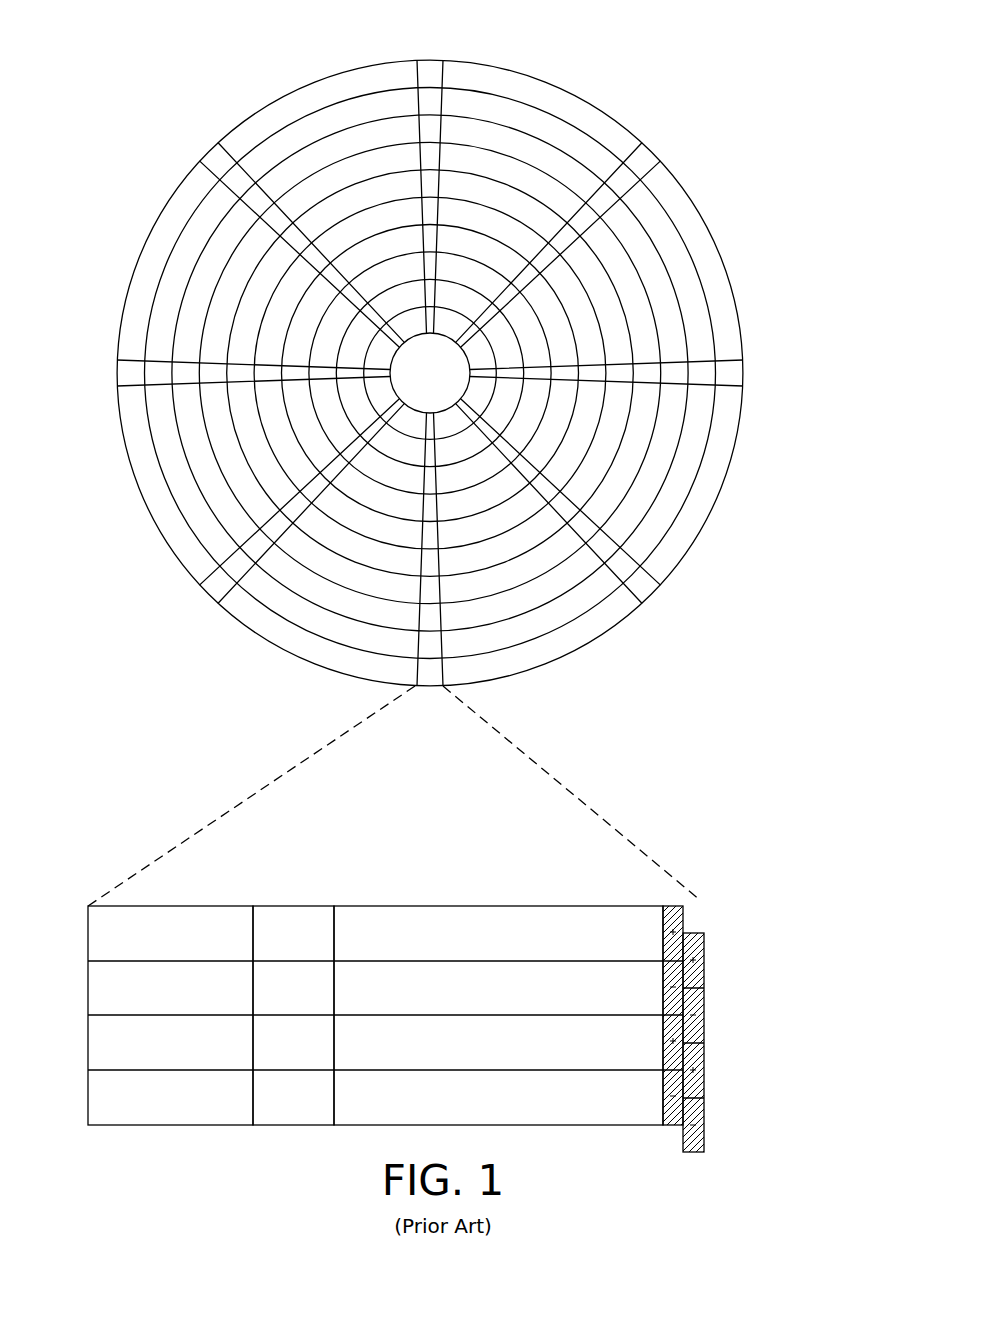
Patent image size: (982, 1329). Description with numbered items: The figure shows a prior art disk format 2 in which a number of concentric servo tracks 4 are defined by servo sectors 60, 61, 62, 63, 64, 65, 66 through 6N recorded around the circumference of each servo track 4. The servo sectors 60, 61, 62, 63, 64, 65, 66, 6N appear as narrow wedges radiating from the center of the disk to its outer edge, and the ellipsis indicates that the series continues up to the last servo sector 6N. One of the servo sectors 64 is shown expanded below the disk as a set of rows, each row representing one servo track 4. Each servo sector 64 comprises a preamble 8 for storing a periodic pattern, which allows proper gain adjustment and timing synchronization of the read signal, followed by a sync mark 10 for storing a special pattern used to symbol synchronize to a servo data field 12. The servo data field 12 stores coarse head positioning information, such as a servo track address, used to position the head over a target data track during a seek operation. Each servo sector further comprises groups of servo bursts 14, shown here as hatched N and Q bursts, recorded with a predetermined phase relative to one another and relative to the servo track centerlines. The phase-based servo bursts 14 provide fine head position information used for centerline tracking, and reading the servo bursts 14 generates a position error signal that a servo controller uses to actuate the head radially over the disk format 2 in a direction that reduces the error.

The disk format 2 is at (200, 63).
The servo track 4 is at (560, 105).
The servo sector 60 is at (430, 68).
The servo sector 61 is at (647, 158).
The servo sector 62 is at (737, 375).
The servo sector 63 is at (648, 593).
The servo sector 64 is at (288, 754).
The servo sector 65 is at (212, 593).
The servo sector 66 is at (120, 375).
The servo sector 6N is at (215, 152).
The preamble 8 is at (178, 905).
The sync mark 10 is at (296, 905).
The servo data field 12 is at (486, 905).
The servo bursts 14 is at (700, 903).